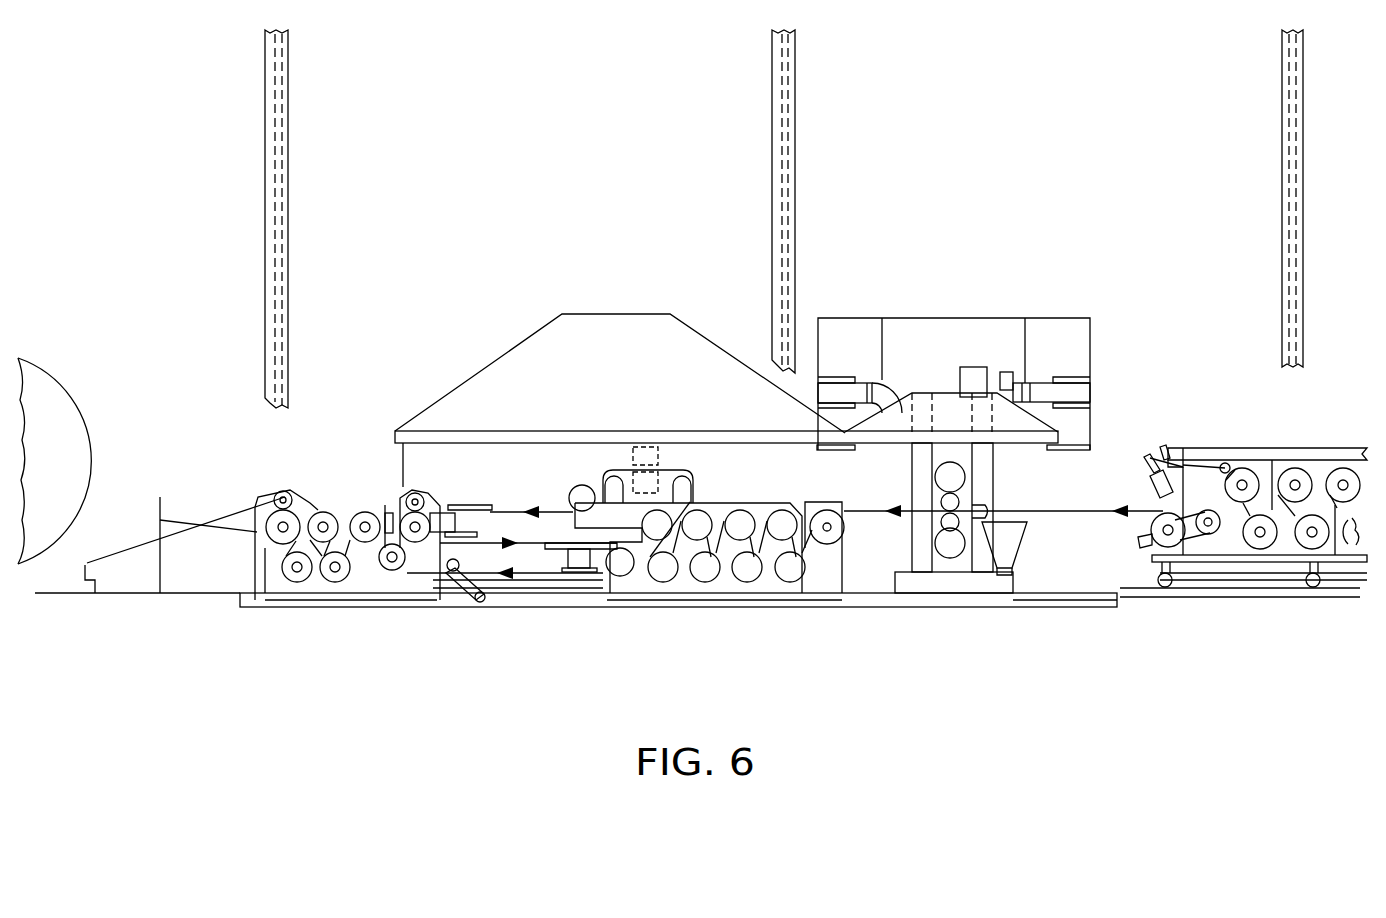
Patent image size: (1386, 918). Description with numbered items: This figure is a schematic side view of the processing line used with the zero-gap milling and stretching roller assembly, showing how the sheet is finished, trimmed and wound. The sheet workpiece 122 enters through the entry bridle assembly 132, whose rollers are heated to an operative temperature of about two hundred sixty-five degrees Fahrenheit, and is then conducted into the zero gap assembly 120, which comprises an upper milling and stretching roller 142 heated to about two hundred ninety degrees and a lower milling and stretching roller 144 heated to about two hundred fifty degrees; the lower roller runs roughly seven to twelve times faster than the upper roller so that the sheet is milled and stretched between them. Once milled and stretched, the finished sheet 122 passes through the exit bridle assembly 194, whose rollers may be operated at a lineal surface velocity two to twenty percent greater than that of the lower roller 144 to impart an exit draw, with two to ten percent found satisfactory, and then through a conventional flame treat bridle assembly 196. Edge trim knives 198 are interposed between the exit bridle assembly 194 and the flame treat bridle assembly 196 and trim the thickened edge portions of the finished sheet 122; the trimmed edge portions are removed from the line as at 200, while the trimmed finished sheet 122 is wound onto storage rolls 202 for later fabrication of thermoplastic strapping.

The zero gap assembly 120 is at (1007, 494).
The sheet workpiece 122 is at (175, 537).
The entry bridle assembly 132 is at (1186, 433).
The upper milling and stretching roller 142 is at (942, 497).
The lower milling and stretching roller 144 is at (957, 522).
The exit bridle assembly 194 is at (795, 600).
The flame treat bridle assembly 196 is at (332, 600).
The edge trim knives 198 is at (462, 587).
The trimmed edge portions removal 200 is at (198, 395).
The storage rolls 202 is at (113, 537).